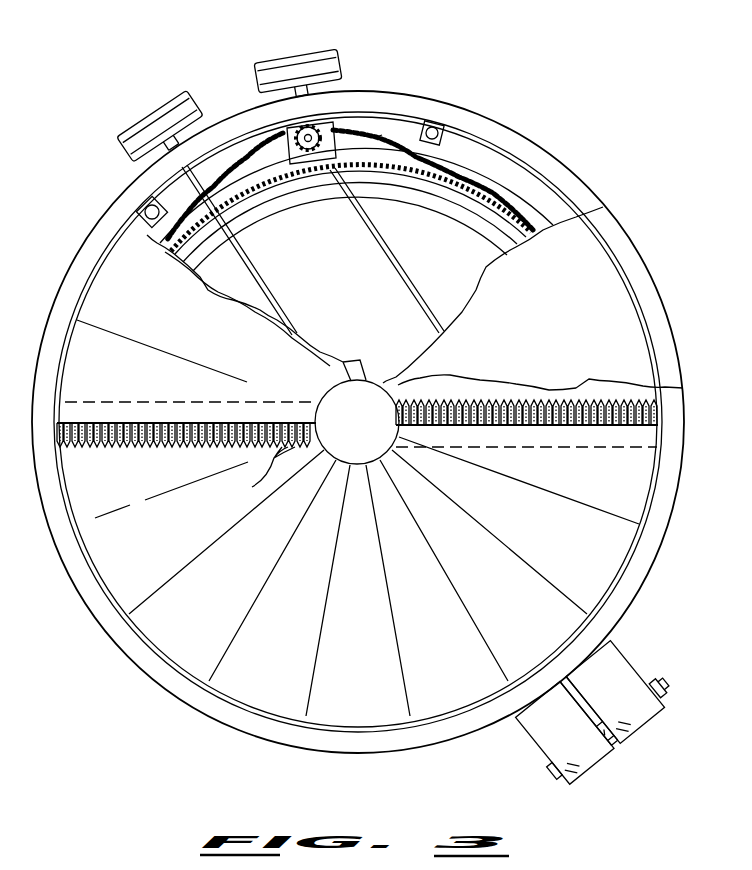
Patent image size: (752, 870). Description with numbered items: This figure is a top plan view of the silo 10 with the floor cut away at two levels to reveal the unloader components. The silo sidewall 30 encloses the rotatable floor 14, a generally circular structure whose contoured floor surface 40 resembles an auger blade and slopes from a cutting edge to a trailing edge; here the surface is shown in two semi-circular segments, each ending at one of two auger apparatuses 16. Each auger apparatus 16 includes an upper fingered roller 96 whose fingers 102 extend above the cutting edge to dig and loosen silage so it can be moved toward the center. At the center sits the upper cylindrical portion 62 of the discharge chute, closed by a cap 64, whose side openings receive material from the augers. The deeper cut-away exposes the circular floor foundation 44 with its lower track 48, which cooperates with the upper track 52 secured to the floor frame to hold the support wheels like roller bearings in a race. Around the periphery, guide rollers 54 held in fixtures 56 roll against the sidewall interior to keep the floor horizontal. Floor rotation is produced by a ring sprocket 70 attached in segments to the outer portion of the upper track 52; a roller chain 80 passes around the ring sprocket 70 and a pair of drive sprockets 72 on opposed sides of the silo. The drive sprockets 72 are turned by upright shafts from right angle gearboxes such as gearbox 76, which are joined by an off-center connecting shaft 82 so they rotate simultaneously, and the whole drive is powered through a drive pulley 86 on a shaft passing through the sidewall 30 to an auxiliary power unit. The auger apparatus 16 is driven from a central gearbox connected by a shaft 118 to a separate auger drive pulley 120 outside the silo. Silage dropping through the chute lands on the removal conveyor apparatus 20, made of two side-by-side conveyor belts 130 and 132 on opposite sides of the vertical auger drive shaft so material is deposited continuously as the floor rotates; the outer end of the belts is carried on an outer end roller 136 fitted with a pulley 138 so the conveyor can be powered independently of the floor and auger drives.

The silo 10 is at (92, 629).
The rotatable floor 14 is at (640, 386).
The auger apparatus 16 is at (132, 454).
The removal conveyor apparatus 20 is at (592, 723).
The silo sidewall 30 is at (194, 698).
The floor surface 40 is at (126, 278).
The floor foundation 44 is at (556, 295).
The lower track 48 is at (589, 328).
The upper track 52 is at (483, 205).
The guide rollers 54 is at (148, 208).
The guide roller fixtures 56 is at (143, 223).
The upper cylindrical portion of discharge chute 62 is at (333, 464).
The cap 64 is at (396, 467).
The ring sprocket 70 is at (493, 193).
The drive sprockets 72 is at (318, 135).
The gearbox 76 is at (334, 160).
The roller chain 80 is at (380, 137).
The connecting shaft 82 is at (402, 264).
The drive pulley 86 is at (287, 60).
The fingered roller 96 is at (197, 436).
The fingers 102 is at (252, 487).
The shaft 118 is at (262, 270).
The auger drive pulley 120 is at (145, 120).
The conveyor belt 130 is at (534, 749).
The conveyor belt 132 is at (615, 692).
The outer end roller 136 is at (555, 770).
The conveyor pulley 138 is at (660, 686).